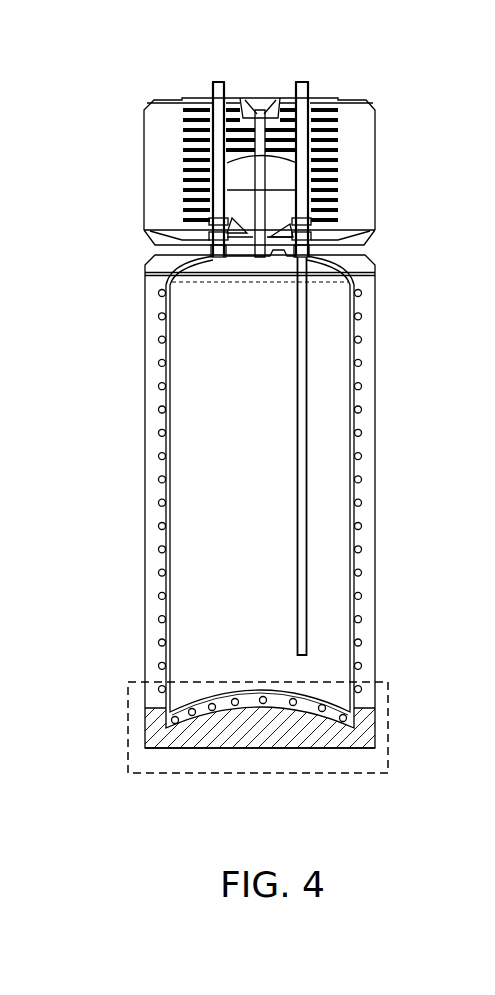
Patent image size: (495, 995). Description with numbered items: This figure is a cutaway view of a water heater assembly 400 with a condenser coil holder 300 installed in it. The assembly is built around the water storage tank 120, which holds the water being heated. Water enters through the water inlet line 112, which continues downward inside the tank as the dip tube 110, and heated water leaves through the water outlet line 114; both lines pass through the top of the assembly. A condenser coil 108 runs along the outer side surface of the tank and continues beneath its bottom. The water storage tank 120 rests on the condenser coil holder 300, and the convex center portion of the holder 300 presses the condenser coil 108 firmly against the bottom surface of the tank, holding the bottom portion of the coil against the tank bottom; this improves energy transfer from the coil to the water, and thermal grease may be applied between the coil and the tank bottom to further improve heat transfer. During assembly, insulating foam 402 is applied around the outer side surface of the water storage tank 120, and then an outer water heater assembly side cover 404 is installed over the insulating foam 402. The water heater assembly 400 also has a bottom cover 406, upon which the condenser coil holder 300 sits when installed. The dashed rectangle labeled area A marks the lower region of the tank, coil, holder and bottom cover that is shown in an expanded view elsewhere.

The water heater assembly 400 is at (110, 428).
The water outlet line 114 is at (217, 82).
The water inlet line 112 is at (302, 82).
The dip tube 110 is at (308, 368).
The outer water heater assembly side cover 404 is at (145, 643).
The insulating foam 402 is at (157, 523).
The condenser coil 108 is at (158, 408).
The bottom cover 406 is at (360, 750).
The condenser coil holder 300 is at (282, 734).
The water storage tank 120 is at (282, 462).
The area A is at (385, 680).